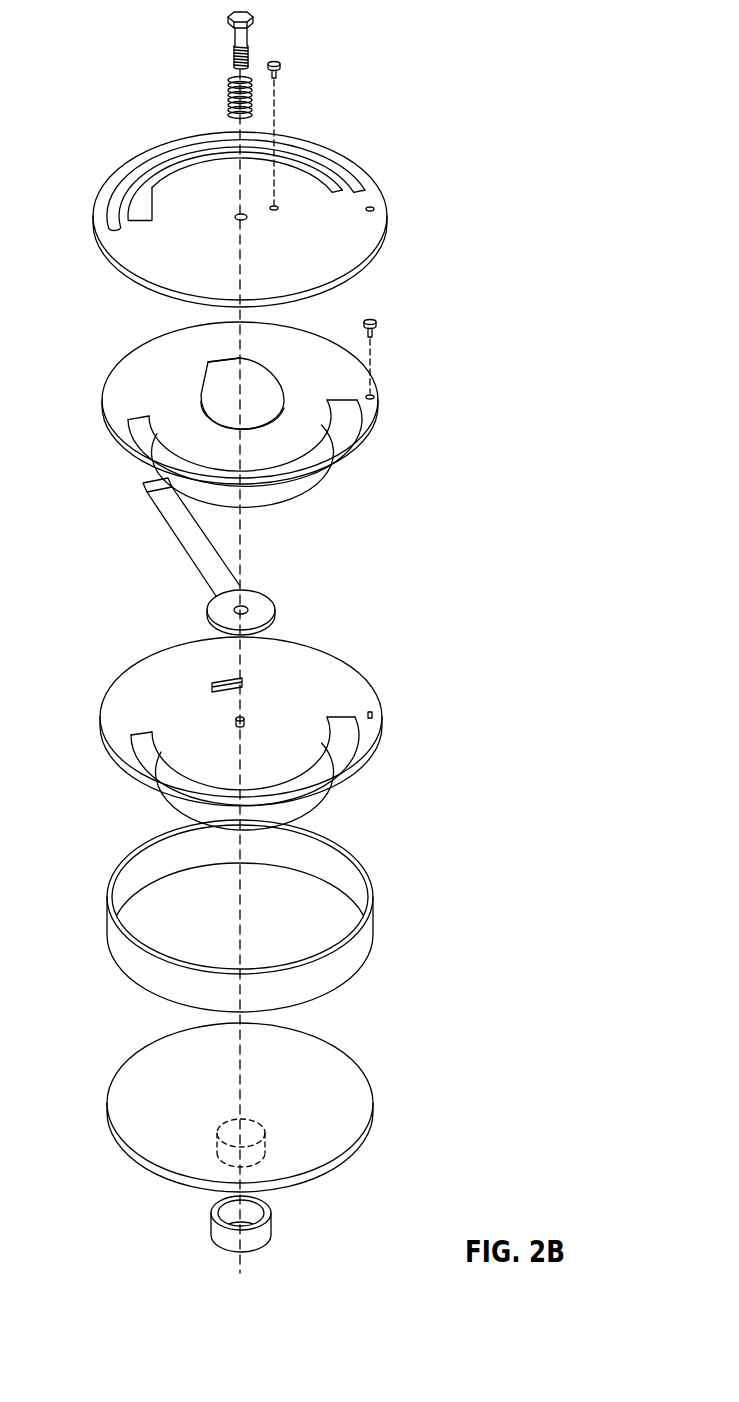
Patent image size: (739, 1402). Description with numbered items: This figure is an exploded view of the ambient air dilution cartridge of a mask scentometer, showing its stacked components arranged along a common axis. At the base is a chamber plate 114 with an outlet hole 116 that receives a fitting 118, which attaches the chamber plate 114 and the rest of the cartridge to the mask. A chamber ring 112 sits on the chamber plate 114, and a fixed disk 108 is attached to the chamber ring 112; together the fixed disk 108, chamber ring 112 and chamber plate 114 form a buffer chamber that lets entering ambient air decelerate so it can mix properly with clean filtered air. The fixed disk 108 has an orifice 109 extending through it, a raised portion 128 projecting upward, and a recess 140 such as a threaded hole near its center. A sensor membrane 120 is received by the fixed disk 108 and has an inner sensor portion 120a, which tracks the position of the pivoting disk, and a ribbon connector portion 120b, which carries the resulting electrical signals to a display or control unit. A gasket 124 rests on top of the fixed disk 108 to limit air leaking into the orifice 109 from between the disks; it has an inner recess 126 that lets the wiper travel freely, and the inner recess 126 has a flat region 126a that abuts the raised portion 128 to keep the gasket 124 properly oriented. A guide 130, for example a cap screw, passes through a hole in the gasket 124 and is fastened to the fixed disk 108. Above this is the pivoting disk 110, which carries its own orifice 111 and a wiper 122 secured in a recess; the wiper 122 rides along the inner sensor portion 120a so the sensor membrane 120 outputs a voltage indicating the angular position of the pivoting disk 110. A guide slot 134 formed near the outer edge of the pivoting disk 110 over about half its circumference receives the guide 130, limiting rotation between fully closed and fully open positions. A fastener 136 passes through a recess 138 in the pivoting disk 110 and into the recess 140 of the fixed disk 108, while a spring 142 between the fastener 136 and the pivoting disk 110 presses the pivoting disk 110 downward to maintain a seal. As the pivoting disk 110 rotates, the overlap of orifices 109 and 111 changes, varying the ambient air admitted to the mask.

The fastener 136 is at (250, 40).
The wiper 122 is at (280, 67).
The spring 142 is at (228, 100).
The guide slot 134 is at (229, 208).
The pivoting disk 110 is at (270, 208).
The recess 138 is at (248, 218).
The orifice 111 is at (145, 222).
The guide 130 is at (378, 323).
The flat region 126a is at (224, 358).
The gasket 124 is at (242, 414).
The inner recess 126 is at (153, 386).
The ribbon connector portion 120b is at (170, 528).
The inner sensor portion 120a is at (262, 600).
The sensor membrane 120 is at (218, 560).
The raised portion 128 is at (212, 685).
The fixed disk 108 is at (270, 732).
The recess 140 is at (236, 720).
The orifice 109 is at (352, 745).
The chamber ring 112 is at (373, 880).
The chamber plate 114 is at (275, 1111).
The outlet hole 116 is at (217, 1144).
The fitting 118 is at (210, 1220).